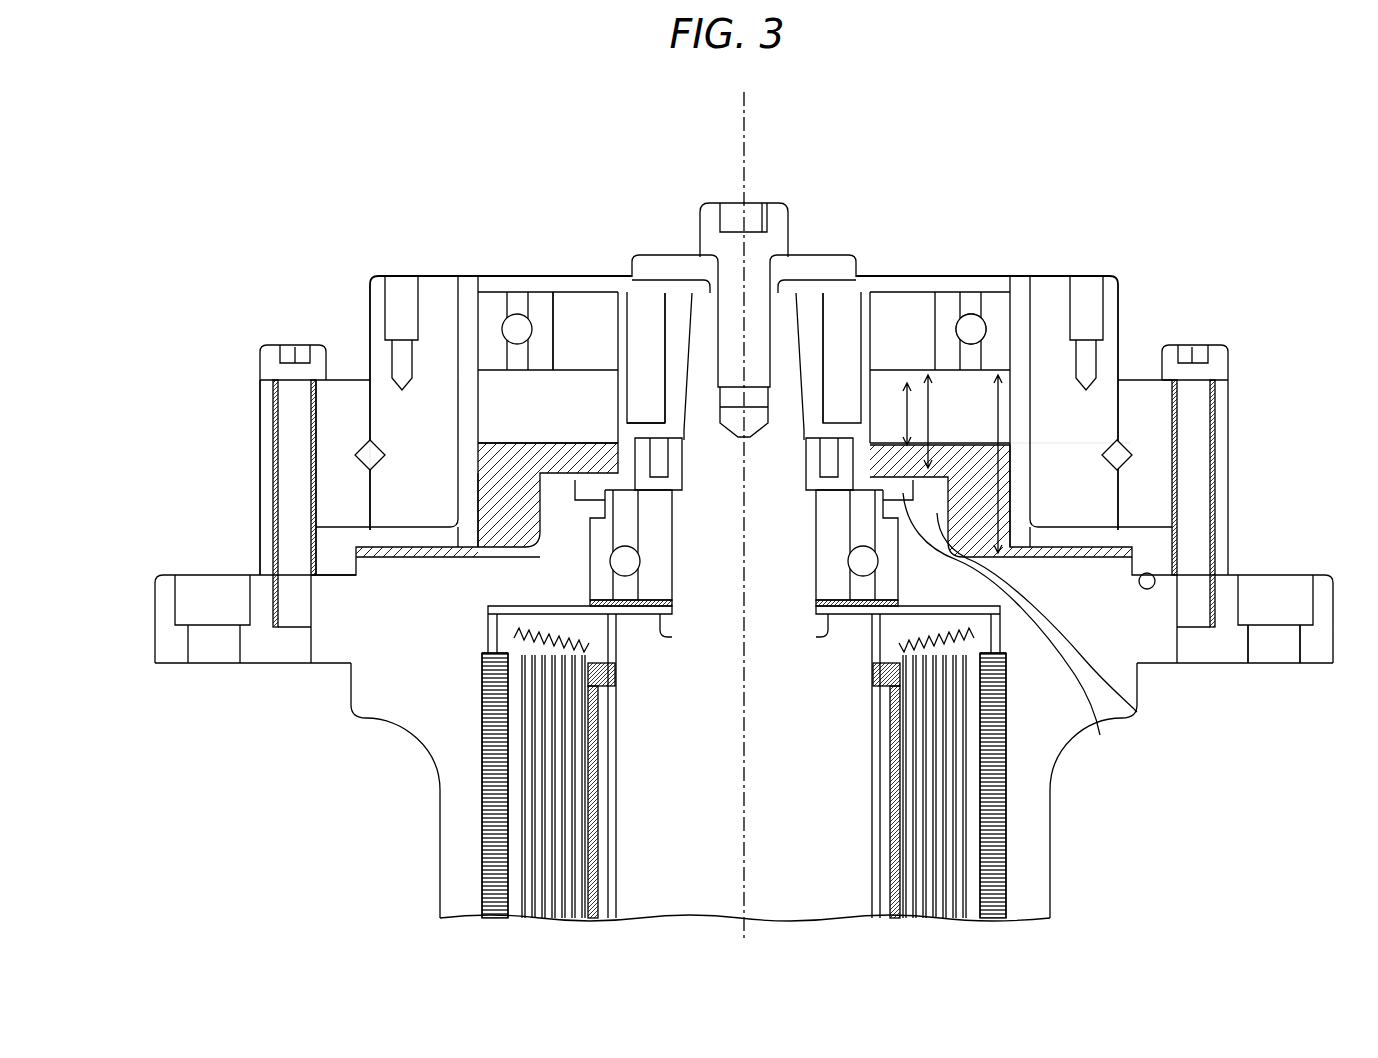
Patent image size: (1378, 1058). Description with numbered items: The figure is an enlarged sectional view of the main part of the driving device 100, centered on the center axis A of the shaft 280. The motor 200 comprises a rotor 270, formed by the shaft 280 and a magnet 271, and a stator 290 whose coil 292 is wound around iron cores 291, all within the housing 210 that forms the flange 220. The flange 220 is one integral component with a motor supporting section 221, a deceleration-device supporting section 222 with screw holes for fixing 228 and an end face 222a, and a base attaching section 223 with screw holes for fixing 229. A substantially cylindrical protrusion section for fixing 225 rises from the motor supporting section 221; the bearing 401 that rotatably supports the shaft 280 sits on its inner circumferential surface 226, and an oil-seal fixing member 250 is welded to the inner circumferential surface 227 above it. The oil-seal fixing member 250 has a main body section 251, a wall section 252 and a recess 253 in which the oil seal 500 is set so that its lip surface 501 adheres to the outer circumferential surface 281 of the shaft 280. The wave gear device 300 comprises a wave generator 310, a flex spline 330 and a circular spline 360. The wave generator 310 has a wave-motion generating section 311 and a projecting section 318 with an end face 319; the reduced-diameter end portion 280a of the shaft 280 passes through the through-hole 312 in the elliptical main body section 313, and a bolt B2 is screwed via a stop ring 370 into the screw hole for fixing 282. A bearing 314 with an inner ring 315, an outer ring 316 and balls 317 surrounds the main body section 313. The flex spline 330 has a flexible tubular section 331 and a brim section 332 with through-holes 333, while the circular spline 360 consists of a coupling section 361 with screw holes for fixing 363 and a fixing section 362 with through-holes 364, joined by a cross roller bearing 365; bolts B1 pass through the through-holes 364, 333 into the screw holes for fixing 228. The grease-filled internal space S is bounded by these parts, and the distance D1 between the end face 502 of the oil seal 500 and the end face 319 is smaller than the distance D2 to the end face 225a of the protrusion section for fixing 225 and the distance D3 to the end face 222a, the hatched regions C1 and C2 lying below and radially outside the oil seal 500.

The driving device 100 is at (1226, 203).
The motor 200 is at (1057, 875).
The housing 210 is at (1047, 907).
The flange 220 is at (1358, 832).
The motor supporting section 221 is at (1010, 655).
The deceleration-device supporting section 222 is at (1193, 647).
The end face of the deceleration-device supporting section 222a is at (1055, 545).
The base attaching section 223 is at (1318, 652).
The protrusion section for fixing 225 is at (1137, 665).
The end face of the protrusion section for fixing 225a is at (945, 390).
The inner circumferential surface 226 is at (1045, 592).
The inner circumferential surface 227 is at (1075, 620).
The screw holes for fixing 228 is at (1250, 652).
The screw holes for fixing 229 is at (1295, 652).
The oil-seal fixing member 250 is at (510, 139).
The main body section 251 is at (545, 385).
The wall section 252 is at (612, 383).
The recess 253 is at (647, 457).
The rotor 270 is at (289, 842).
The magnet 271 is at (608, 855).
The shaft 280 is at (665, 887).
The end portion of the shaft 280a is at (738, 447).
The outer circumferential surface of the shaft 281 is at (675, 500).
The screw hole for fixing 282 is at (768, 300).
The stator 290 is at (278, 768).
The iron cores 291 is at (480, 784).
The coil 292 is at (518, 816).
The wave gear device 300 is at (1152, 322).
The wave generator 310 is at (990, 116).
The wave-motion generating section 311 is at (1040, 163).
The through-hole 312 is at (792, 318).
The main body section 313 is at (908, 320).
The bearing 314 is at (937, 211).
The inner ring 315 is at (945, 306).
The outer ring 316 is at (905, 447).
The balls 317 is at (971, 322).
The projecting section 318 is at (836, 390).
The end face of the projecting section 319 is at (862, 398).
The flex spline 330 is at (1308, 472).
The tubular section 331 is at (1040, 494).
The brim section 332 is at (1015, 548).
The through-holes 333 is at (1210, 556).
The circular spline 360 is at (350, 176).
The coupling section 361 is at (368, 440).
The fixing section 362 is at (300, 362).
The screw holes for fixing 363 is at (392, 305).
The through-holes 364 is at (260, 407).
The bearing 365 is at (335, 417).
The stop ring 370 is at (686, 262).
The bearing 401 is at (588, 598).
The oil seal 500 is at (625, 139).
The lip surface 501 is at (662, 440).
The end face of the oil seal 502 is at (625, 440).
The center axis A is at (750, 114).
The bolts B1 is at (1230, 376).
The bolt B2 is at (735, 203).
The region C1 is at (505, 470).
The region C2 is at (503, 509).
The internal space S is at (503, 426).
The distance D1 is at (894, 411).
The distance D2 is at (941, 421).
The distance D3 is at (984, 464).